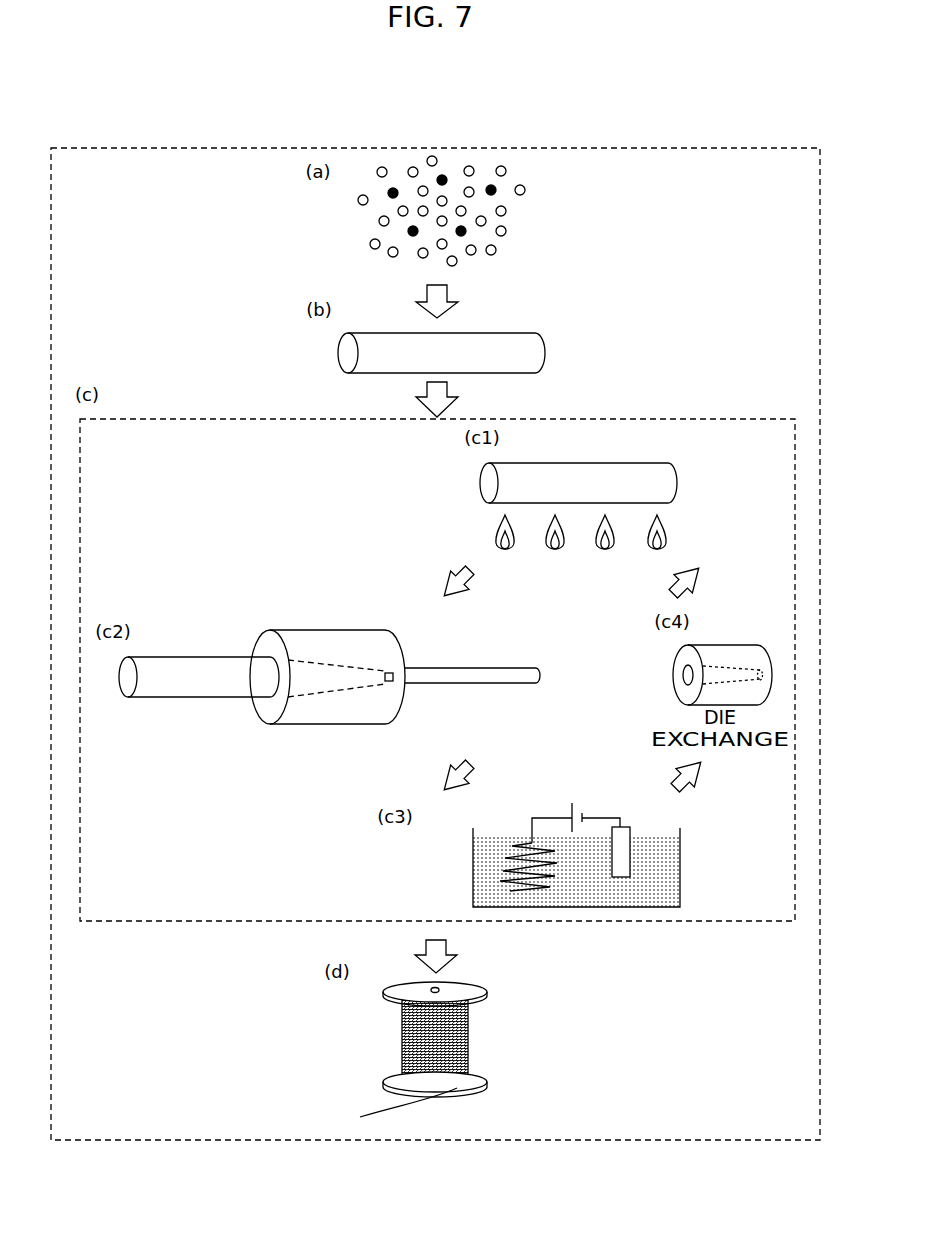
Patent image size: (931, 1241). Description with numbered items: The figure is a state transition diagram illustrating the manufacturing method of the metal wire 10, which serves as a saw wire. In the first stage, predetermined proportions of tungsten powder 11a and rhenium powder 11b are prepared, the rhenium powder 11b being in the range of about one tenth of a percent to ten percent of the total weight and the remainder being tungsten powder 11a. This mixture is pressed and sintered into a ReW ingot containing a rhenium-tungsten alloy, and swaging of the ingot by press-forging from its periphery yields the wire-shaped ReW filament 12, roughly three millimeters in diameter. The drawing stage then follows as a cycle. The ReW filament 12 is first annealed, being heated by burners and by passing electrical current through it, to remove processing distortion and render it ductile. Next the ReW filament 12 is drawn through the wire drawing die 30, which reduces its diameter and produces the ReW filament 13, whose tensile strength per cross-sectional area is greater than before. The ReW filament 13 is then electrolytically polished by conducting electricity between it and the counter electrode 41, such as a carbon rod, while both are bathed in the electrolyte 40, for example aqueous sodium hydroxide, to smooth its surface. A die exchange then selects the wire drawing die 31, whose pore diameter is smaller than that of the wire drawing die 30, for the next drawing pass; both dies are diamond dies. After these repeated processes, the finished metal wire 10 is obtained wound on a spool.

The metal wire 10 is at (472, 1042).
The tungsten powder 11a is at (506, 213).
The rhenium powder 11b is at (408, 231).
The ReW filament 12 is at (525, 353).
The ReW filament 13 is at (488, 672).
The wire drawing die 30 is at (363, 643).
The wire drawing die 31 is at (737, 655).
The electrolyte 40 is at (660, 880).
The counter electrode 41 is at (620, 848).